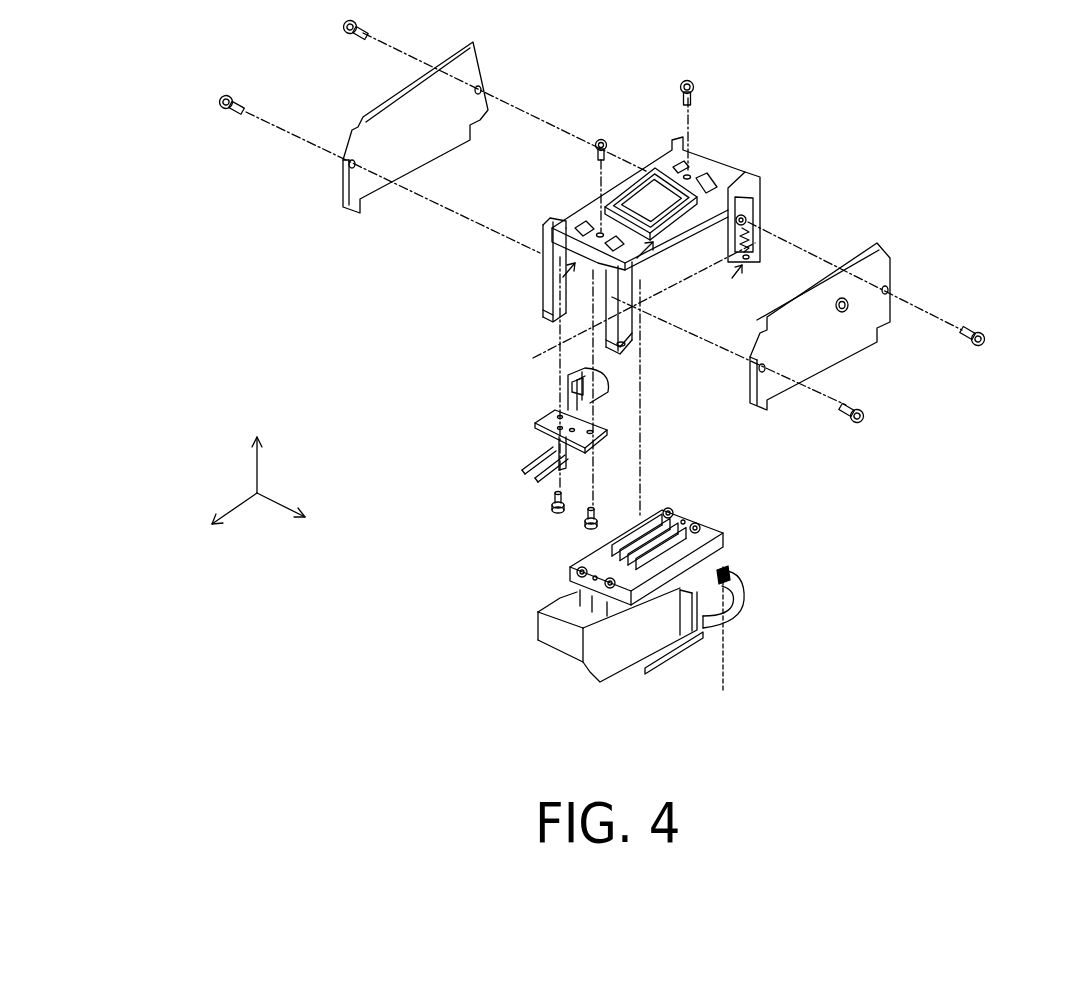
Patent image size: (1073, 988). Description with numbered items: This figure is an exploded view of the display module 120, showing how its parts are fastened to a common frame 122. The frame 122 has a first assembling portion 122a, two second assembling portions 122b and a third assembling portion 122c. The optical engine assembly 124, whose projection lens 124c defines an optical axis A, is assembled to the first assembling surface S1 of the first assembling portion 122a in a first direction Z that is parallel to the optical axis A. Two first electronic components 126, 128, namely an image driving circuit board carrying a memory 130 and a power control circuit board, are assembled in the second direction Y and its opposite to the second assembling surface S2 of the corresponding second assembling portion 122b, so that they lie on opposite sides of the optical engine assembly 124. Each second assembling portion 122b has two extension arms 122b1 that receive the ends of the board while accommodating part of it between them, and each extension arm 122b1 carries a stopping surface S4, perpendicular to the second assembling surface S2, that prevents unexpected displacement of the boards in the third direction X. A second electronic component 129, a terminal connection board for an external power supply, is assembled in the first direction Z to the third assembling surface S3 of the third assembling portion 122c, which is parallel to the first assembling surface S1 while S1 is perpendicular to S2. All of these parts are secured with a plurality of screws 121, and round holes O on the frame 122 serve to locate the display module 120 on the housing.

The display module 120 is at (1070, 598).
The screws 121 is at (218, 97).
The frame 122 is at (582, 265).
The first assembling portion 122a is at (620, 176).
The second assembling portion 122b is at (582, 351).
The extension arm 122b1 is at (598, 329).
The third assembling portion 122c is at (550, 228).
The optical engine assembly 124 is at (667, 613).
The projection lens 124c is at (742, 602).
The first electronic component 126 is at (846, 326).
The first electronic component 128 is at (398, 103).
The second electronic component 129 is at (540, 413).
The memory 130 is at (848, 300).
The first assembling surface S1 is at (580, 234).
The second assembling surface S2 is at (750, 248).
The third assembling surface S3 is at (557, 288).
The stopping surface S4 is at (714, 181).
The round hole O is at (737, 277).
The optical axis A is at (723, 665).